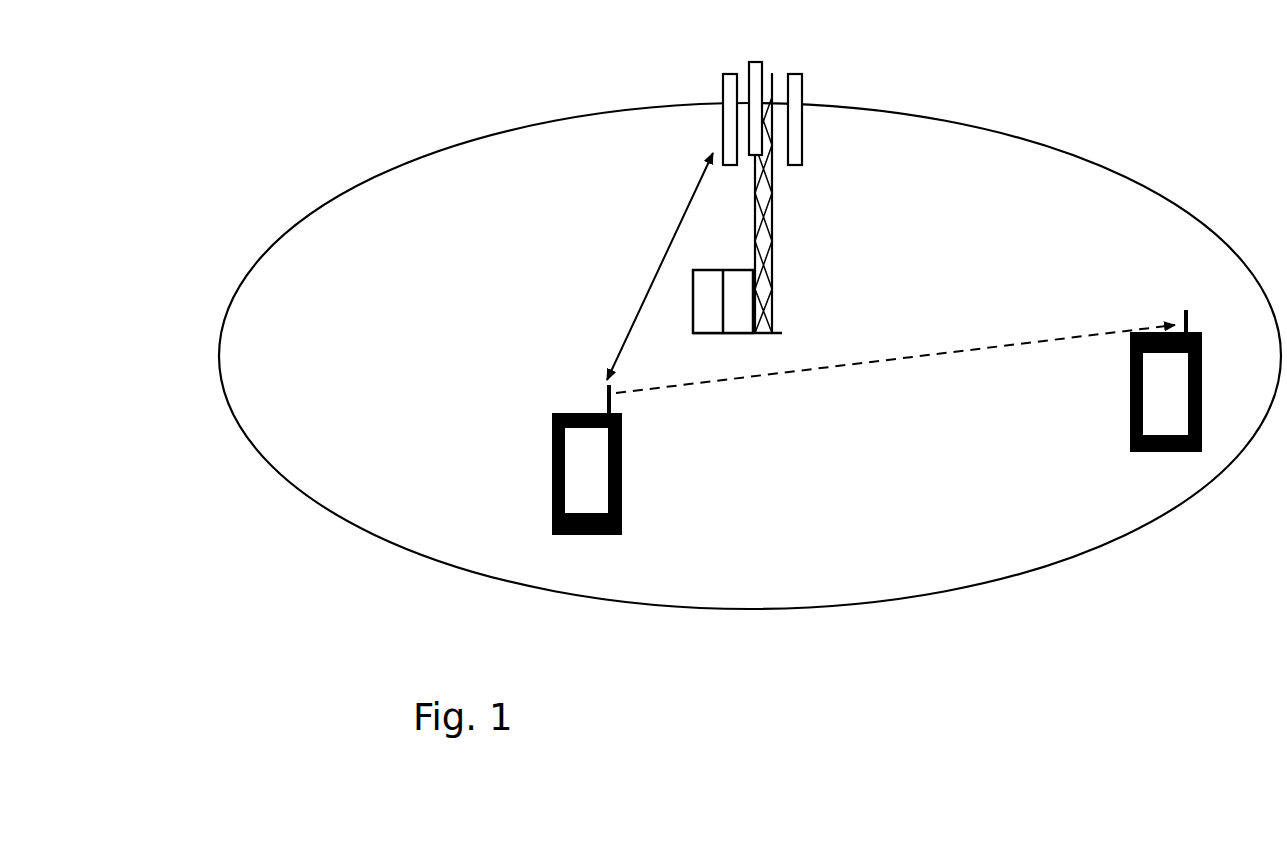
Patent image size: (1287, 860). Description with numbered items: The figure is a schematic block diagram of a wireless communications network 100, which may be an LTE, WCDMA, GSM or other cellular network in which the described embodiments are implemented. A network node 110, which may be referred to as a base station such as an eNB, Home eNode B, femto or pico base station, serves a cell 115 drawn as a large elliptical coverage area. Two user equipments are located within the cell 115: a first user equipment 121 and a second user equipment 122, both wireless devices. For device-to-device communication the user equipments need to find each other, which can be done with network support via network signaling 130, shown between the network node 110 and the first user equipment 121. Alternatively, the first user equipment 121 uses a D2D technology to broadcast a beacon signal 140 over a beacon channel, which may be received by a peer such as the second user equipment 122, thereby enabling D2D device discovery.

The communications network 100 is at (1085, 647).
The network node 110 is at (773, 292).
The cell 115 is at (348, 522).
The first user equipment 121 is at (552, 432).
The second user equipment 122 is at (1130, 443).
The network signaling 130 is at (625, 343).
The beacon signal 140 is at (820, 368).